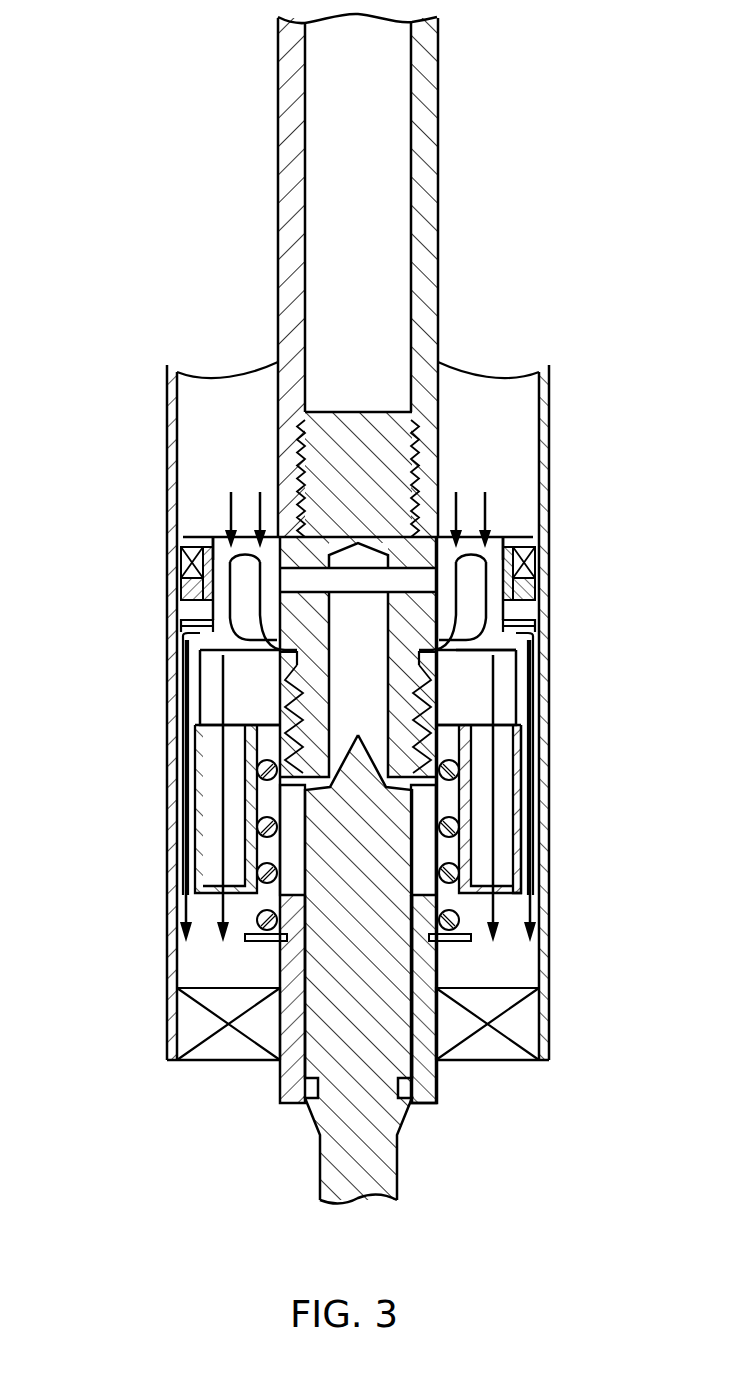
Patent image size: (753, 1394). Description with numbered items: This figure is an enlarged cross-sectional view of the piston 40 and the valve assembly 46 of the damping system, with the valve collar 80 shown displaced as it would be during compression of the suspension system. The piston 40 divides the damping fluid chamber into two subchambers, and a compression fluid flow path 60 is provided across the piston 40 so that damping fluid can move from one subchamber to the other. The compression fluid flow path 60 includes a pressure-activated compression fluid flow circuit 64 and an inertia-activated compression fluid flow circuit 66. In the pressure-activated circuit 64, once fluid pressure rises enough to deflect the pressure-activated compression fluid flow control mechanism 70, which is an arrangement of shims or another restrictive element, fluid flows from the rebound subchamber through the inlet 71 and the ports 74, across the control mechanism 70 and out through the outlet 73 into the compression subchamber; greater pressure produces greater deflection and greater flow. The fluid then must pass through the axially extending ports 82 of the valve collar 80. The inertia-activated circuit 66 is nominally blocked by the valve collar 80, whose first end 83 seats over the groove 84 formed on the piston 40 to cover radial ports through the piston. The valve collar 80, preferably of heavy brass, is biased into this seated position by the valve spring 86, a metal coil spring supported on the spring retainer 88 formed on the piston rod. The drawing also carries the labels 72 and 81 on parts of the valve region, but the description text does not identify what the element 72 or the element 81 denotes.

The piston 40 is at (545, 540).
The valve assembly 46 is at (140, 607).
The compression fluid flow path 60 is at (488, 468).
The compression fluid flow circuit 64 is at (218, 875).
The inertia-activated compression fluid flow circuit 66 is at (205, 503).
The pressure-activated compression fluid flow control mechanism 70 is at (245, 672).
The inlet 71 is at (215, 540).
The sealing assembly 72 is at (642, 697).
The outlet 73 is at (500, 656).
The ports 74 is at (185, 563).
The valve collar 80 is at (545, 835).
The retaining cap 81 is at (177, 627).
The axially extending ports 82 is at (215, 813).
The first end 83 is at (545, 697).
The groove 84 is at (545, 627).
The valve spring 86 is at (458, 920).
The spring retainer 88 is at (470, 945).